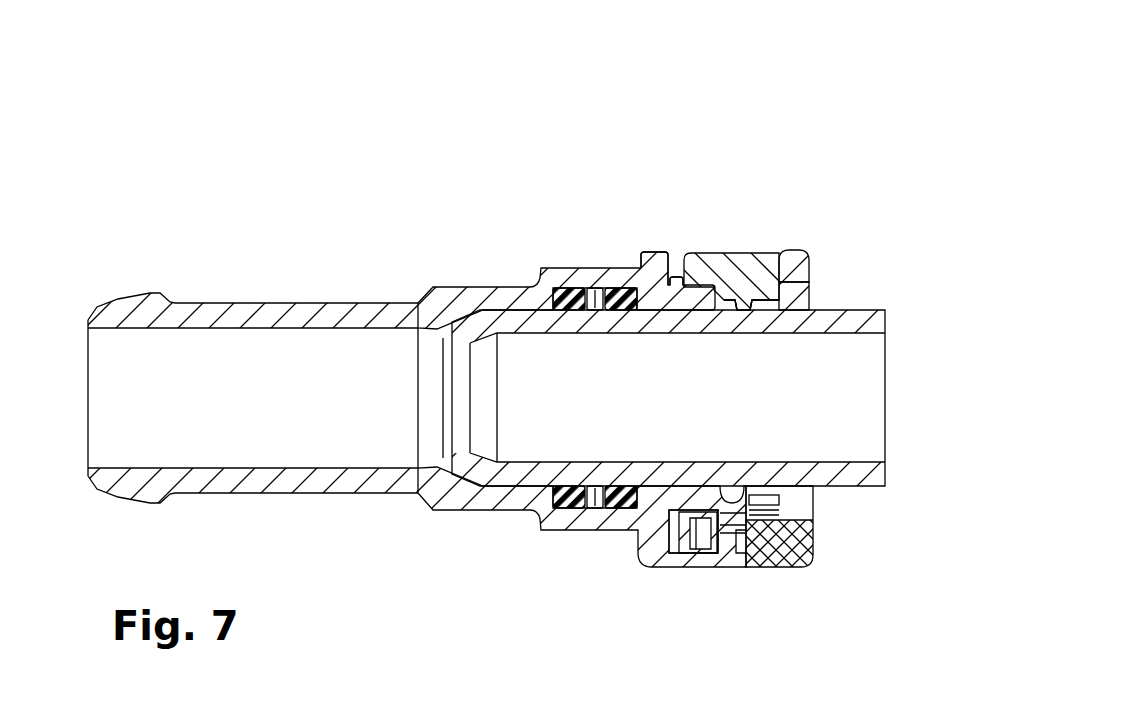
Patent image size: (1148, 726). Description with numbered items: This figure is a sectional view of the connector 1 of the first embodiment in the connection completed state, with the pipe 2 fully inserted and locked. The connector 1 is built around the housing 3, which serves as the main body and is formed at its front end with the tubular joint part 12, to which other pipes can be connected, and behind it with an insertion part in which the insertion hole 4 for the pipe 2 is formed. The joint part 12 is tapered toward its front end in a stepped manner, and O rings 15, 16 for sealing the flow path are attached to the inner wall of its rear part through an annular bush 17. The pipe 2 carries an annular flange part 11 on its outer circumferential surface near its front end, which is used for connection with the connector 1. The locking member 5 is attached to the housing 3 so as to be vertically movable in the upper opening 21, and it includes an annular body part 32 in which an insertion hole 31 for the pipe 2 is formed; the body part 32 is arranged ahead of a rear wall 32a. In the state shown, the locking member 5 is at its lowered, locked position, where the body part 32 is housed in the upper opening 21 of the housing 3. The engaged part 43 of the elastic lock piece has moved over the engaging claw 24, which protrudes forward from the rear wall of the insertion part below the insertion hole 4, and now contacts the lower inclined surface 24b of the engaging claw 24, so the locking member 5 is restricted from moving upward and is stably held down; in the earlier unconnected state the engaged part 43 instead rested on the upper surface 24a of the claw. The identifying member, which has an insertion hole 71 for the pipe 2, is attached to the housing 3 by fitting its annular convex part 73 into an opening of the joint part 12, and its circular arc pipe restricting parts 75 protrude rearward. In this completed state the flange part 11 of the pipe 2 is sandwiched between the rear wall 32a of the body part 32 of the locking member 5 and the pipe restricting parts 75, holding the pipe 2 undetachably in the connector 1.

The connector 1 is at (567, 354).
The pipe 2 is at (567, 407).
The housing 3 is at (567, 413).
The insertion hole 4 is at (806, 283).
The locking member 5 is at (567, 413).
The flange part 11 is at (777, 304).
The joint part 12 is at (455, 287).
The O ring 15 is at (560, 288).
The O ring 16 is at (613, 288).
The annular bush 17 is at (597, 508).
The upper opening 21 is at (678, 276).
The engaging claw 24 is at (788, 555).
The upper surface 24a is at (750, 522).
The lower inclined surface 24b is at (749, 540).
The insertion hole 31 is at (779, 311).
The body part 32 is at (740, 300).
The rear wall 32a is at (810, 300).
The engaged part 43 is at (736, 552).
The insertion hole 71 is at (668, 497).
The annular convex part 73 is at (649, 286).
The pipe restricting parts 75 is at (700, 555).